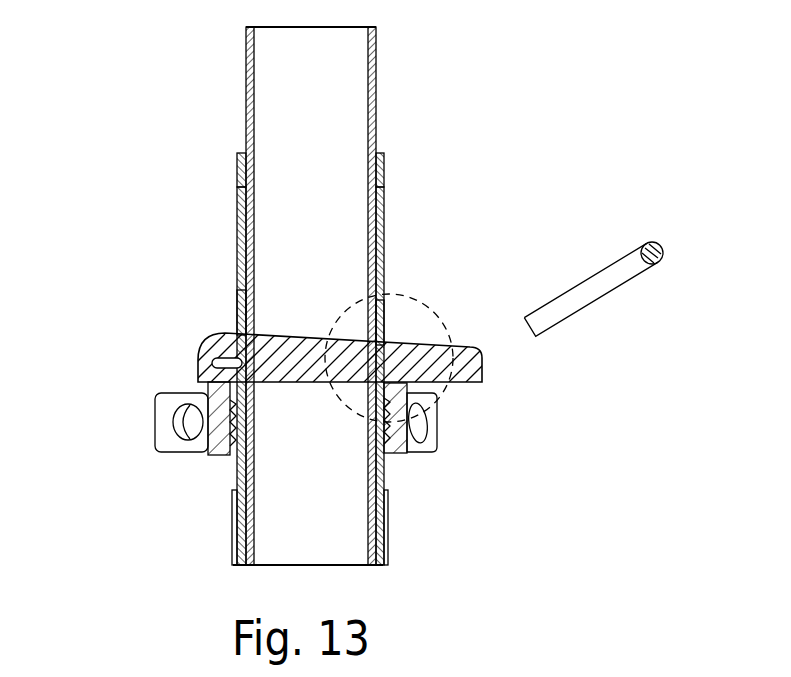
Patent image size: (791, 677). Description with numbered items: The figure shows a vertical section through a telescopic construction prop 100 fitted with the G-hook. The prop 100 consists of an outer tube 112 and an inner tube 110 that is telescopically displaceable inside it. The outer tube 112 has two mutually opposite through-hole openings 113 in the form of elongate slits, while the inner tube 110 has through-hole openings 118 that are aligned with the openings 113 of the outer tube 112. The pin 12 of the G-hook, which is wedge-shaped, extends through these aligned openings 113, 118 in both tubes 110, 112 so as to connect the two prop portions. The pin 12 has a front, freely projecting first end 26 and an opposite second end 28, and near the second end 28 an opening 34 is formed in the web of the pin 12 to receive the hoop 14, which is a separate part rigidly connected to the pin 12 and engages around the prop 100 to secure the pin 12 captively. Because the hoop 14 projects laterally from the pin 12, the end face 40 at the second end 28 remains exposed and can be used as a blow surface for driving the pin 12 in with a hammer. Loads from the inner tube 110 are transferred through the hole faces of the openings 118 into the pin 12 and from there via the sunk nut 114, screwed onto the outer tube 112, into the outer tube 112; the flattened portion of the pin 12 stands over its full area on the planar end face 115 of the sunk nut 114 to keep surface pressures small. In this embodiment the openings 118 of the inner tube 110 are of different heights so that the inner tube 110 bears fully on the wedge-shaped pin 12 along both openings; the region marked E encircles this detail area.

The telescopic construction prop 100 is at (470, 150).
The inner tube 110 is at (377, 82).
The outer tube 112 is at (240, 160).
The through-hole openings of the outer tube 113 is at (238, 212).
The through-hole openings of the inner tube 118 is at (240, 303).
The pin 12 is at (298, 337).
The first end of the pin 26 is at (364, 332).
The opening 34 is at (226, 358).
The second end of the pin 28 is at (153, 392).
The end face 40 is at (197, 368).
The sunk nut 114 is at (408, 455).
The planar end face of the sunk nut 115 is at (418, 420).
The hoop 14 is at (597, 285).
The detail region E is at (437, 308).